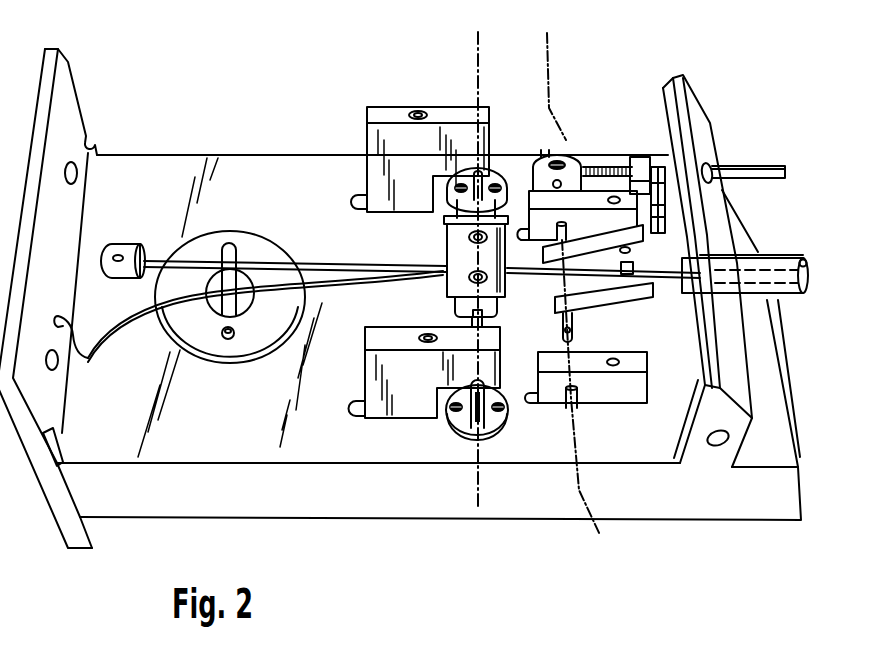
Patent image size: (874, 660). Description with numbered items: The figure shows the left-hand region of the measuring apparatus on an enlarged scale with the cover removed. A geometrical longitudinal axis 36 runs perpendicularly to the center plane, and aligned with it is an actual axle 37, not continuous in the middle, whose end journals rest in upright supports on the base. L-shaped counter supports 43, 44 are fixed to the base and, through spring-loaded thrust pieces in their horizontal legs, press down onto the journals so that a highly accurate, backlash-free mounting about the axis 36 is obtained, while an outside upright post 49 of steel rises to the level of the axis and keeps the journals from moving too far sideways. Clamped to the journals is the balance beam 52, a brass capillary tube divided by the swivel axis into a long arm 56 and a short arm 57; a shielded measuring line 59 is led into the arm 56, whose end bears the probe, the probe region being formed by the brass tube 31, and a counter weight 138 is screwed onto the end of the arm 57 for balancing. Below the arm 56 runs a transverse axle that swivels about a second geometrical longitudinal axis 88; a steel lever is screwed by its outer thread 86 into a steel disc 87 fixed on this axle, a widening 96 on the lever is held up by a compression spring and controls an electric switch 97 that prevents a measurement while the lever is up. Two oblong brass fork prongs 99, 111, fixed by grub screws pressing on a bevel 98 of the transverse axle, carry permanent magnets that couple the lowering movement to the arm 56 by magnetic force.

The brass tube 31 is at (783, 297).
The geometrical longitudinal axis 36 is at (478, 65).
The axle 37 is at (496, 170).
The counter support 43 is at (389, 112).
The counter support 44 is at (420, 398).
The upright post 49 is at (470, 430).
The balance beam 52 is at (408, 258).
The long arm 56 is at (529, 278).
The short arm 57 is at (302, 224).
The shielded measuring line 59 is at (126, 328).
The outer thread 86 is at (577, 145).
The steel disc 87 is at (543, 157).
The geometrical longitudinal axis 88 is at (586, 401).
The widening 96 is at (640, 160).
The electric switch 97 is at (652, 157).
The bevel 98 is at (575, 320).
The fork prong 99 is at (647, 300).
The fork prong 111 is at (647, 227).
The counter weight 138 is at (123, 243).